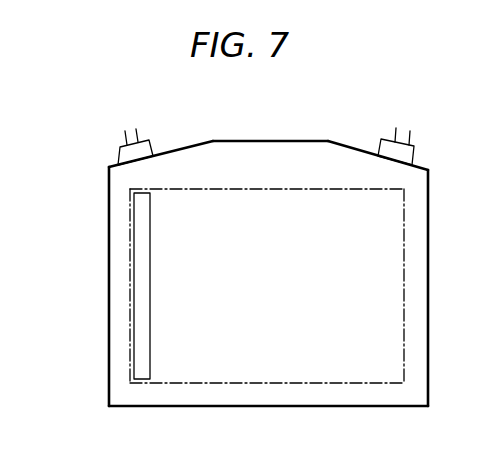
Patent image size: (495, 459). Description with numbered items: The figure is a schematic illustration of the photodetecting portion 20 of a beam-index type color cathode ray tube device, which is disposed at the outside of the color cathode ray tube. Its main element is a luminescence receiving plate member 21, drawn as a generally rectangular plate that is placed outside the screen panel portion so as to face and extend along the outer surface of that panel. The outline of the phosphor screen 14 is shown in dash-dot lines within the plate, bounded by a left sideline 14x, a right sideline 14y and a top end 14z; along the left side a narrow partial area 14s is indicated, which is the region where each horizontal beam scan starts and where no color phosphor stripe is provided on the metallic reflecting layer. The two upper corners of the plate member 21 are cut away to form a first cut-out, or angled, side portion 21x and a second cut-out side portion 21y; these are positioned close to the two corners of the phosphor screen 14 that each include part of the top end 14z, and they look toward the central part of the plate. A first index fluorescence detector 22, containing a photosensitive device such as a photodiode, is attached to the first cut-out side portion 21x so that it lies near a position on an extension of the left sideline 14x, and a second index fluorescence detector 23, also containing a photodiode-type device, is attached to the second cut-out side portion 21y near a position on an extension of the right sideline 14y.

The photodetecting portion 20 is at (288, 271).
The luminescence receiving plate member 21 is at (156, 407).
The first cut-out side portion 21x is at (187, 149).
The second cut-out side portion 21y is at (347, 148).
The first index fluorescence detector 22 is at (136, 146).
The second index fluorescence detector 23 is at (388, 137).
The phosphor screen 14 is at (263, 277).
The left sideline 14x is at (130, 278).
The right sideline 14y is at (404, 279).
The top end 14z is at (250, 189).
The partial area 14s is at (140, 353).